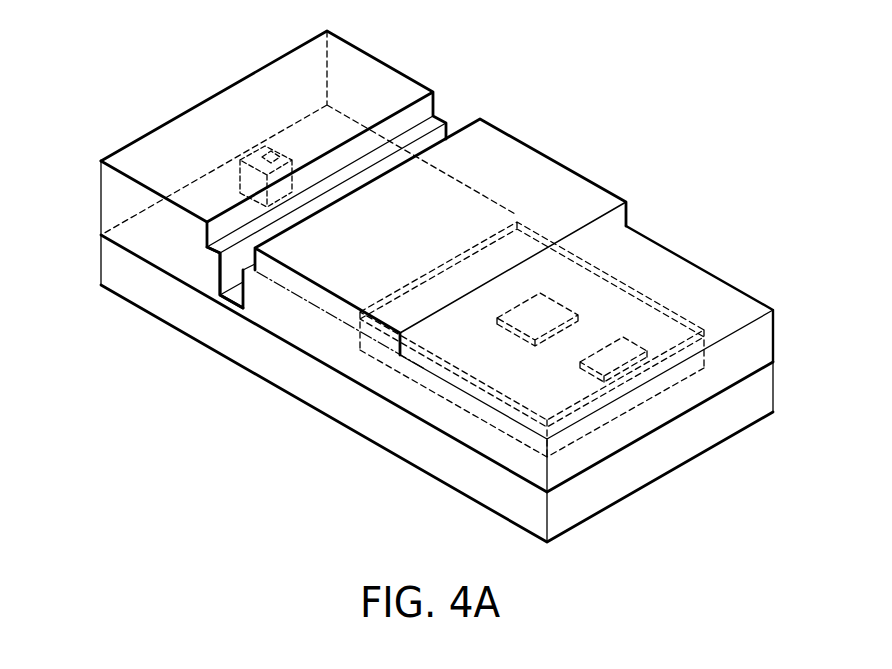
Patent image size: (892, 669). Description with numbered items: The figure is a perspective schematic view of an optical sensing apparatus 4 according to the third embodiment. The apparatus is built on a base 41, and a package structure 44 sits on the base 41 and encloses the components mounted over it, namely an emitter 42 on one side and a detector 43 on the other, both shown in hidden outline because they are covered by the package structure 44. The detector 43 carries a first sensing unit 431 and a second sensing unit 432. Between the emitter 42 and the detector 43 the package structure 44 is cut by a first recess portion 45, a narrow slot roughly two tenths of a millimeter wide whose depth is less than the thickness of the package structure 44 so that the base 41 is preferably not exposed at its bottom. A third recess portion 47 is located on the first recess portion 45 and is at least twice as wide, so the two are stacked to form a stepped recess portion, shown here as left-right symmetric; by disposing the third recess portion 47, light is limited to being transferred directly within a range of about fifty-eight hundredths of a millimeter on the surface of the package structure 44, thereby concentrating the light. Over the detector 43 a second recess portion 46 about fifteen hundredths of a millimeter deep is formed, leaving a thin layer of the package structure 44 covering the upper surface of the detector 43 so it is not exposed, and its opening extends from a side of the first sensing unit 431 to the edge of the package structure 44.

The optical sensing apparatus 4 is at (437, 272).
The base 41 is at (657, 478).
The emitter 42 is at (253, 150).
The detector 43 is at (422, 273).
The first sensing unit 431 is at (510, 339).
The second pad 432 is at (573, 382).
The package structure 44 is at (385, 63).
The first recess portion 45 is at (467, 128).
The second recess portion 46 is at (689, 274).
The third recess portion 47 is at (447, 95).